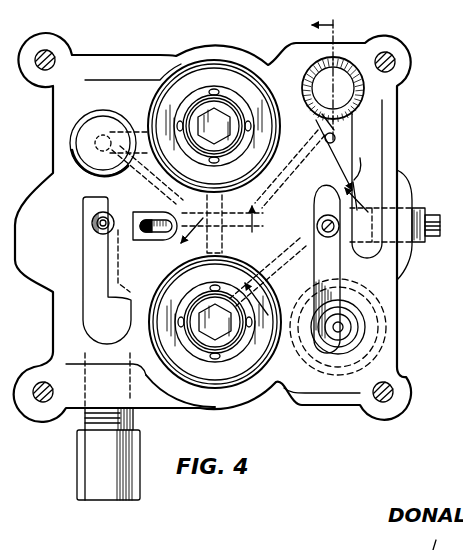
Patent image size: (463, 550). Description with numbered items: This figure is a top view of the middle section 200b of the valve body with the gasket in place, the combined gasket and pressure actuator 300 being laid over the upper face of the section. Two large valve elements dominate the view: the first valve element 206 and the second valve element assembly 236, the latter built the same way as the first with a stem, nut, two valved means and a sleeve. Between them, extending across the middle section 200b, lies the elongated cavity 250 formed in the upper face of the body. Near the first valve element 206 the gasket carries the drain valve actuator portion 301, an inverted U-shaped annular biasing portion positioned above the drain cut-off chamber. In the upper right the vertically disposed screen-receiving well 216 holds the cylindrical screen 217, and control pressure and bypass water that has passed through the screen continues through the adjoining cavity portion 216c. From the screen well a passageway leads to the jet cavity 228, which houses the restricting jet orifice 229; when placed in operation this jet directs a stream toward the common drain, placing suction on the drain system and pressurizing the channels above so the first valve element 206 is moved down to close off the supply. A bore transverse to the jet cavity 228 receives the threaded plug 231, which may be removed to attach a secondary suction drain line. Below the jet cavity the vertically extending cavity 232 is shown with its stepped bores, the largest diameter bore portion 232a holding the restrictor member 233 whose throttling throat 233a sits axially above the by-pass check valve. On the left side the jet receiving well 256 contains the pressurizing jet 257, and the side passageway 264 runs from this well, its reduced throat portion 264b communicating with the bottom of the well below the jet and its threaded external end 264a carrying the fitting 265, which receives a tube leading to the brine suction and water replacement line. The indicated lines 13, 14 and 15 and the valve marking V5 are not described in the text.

The section line 15 is at (66, 122).
The drain valve actuator portion 301 is at (106, 128).
The first valve element 206 is at (215, 112).
The section line 14 is at (298, 128).
The screen 217 is at (342, 60).
The screen-receiving cavity or well 216 is at (310, 66).
The cavity portion 216c is at (346, 147).
The middle section 200b is at (400, 137).
The section line 13 is at (280, 217).
The threaded plug 231 is at (418, 212).
The jet cavity 228 is at (318, 215).
The restricting jet orifice 229 is at (327, 237).
The jet receiving aperture or well 256 is at (93, 218).
The pressurizing jet 257 is at (93, 233).
The elongated cavity 250 is at (160, 231).
The valve V5 is at (218, 218).
The vertically extending cavity 232 is at (380, 300).
The throttling throat 233a is at (345, 327).
The restrictor member 233 is at (338, 342).
The largest diameter bore portion 232a is at (312, 352).
The reduced throat portion 264b is at (120, 280).
The combined gasket and pressure actuator 300 is at (70, 305).
The side passageway 264 is at (98, 353).
The threaded external end 264a is at (137, 403).
The second valve element assembly 236 is at (228, 338).
The fitting 265 is at (77, 466).